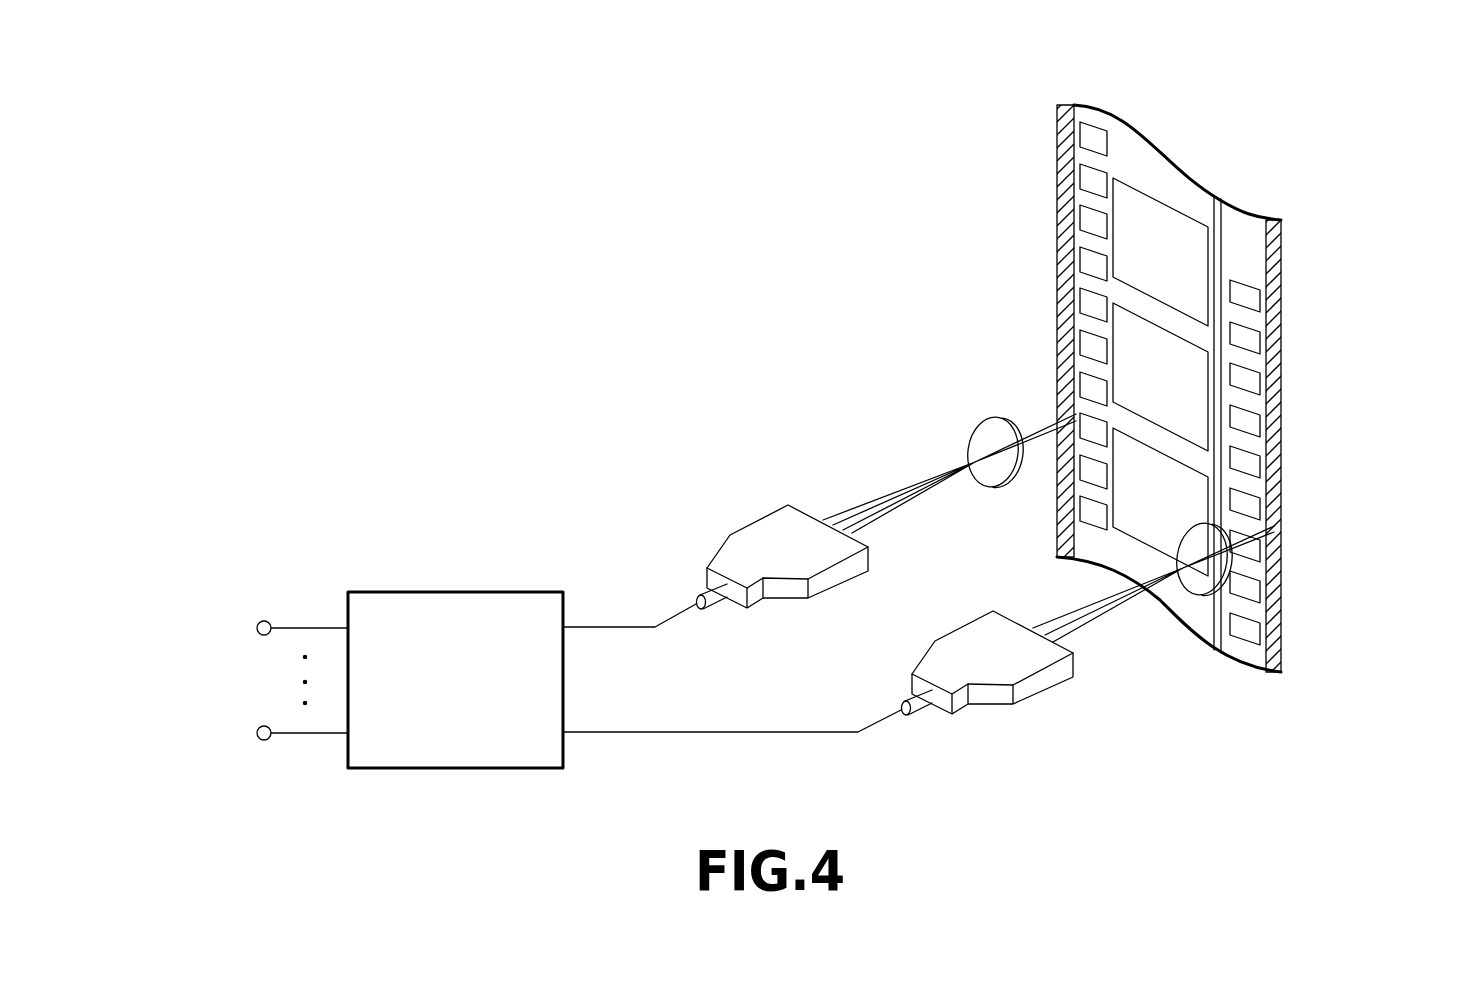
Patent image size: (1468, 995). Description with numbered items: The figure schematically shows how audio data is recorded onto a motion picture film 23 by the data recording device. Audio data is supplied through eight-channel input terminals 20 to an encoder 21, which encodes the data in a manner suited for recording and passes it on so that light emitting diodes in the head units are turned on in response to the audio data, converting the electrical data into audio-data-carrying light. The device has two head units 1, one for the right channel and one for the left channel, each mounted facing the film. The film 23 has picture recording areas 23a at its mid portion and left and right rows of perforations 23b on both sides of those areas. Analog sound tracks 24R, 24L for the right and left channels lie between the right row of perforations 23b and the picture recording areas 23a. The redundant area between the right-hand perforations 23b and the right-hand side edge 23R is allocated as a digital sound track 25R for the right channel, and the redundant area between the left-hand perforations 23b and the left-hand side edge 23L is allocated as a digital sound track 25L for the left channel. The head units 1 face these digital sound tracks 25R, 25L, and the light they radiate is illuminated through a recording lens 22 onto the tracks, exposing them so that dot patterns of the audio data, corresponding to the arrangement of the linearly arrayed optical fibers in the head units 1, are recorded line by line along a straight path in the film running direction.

The head unit 1 is at (757, 533).
The eight-channel input terminals 20 is at (264, 621).
The encoder 21 is at (462, 603).
The recording lens 22 is at (985, 433).
The motion picture film 23 is at (1186, 341).
The left-hand side edge 23L is at (1058, 157).
The right-hand side edge 23R is at (1283, 316).
The picture recording areas 23a is at (1140, 203).
The perforations 23b is at (1090, 255).
The analog sound track for the left channel 24L is at (1218, 202).
The analog sound track for the right channel 24R is at (1237, 203).
The digital sound track for the left channel 25L is at (1067, 112).
The digital sound track for the right channel 25R is at (1283, 230).